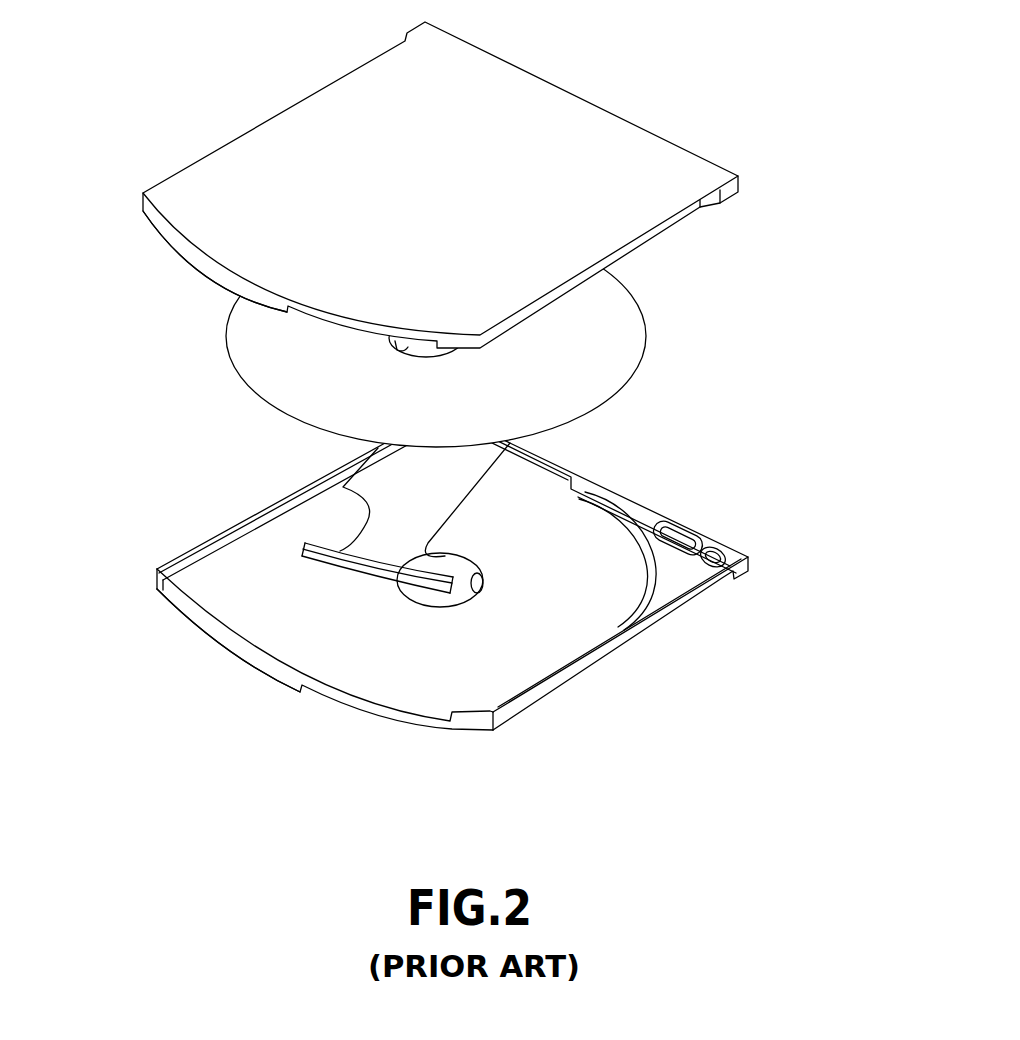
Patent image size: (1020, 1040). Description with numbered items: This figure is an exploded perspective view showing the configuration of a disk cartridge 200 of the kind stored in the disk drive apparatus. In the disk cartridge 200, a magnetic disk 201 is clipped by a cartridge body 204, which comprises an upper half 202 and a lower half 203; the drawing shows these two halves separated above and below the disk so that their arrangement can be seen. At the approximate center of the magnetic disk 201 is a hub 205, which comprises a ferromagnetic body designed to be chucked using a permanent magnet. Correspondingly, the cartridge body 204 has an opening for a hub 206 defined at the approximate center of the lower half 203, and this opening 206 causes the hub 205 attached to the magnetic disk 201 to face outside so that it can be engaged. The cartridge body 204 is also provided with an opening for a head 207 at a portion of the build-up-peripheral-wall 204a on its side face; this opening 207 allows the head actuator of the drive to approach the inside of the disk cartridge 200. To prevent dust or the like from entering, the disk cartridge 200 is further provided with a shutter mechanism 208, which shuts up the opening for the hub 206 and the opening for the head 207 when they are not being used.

The disk cartridge 200 is at (473, 409).
The magnetic disk 201 is at (310, 405).
The upper half 202 is at (662, 193).
The lower half 203 is at (681, 527).
The cartridge body 204 is at (826, 220).
The build-up-peripheral-wall 204a is at (165, 224).
The hub 205 is at (395, 347).
The opening for a hub 206 is at (479, 572).
The opening for a head 207 is at (390, 675).
The shutter mechanism 208 is at (380, 550).